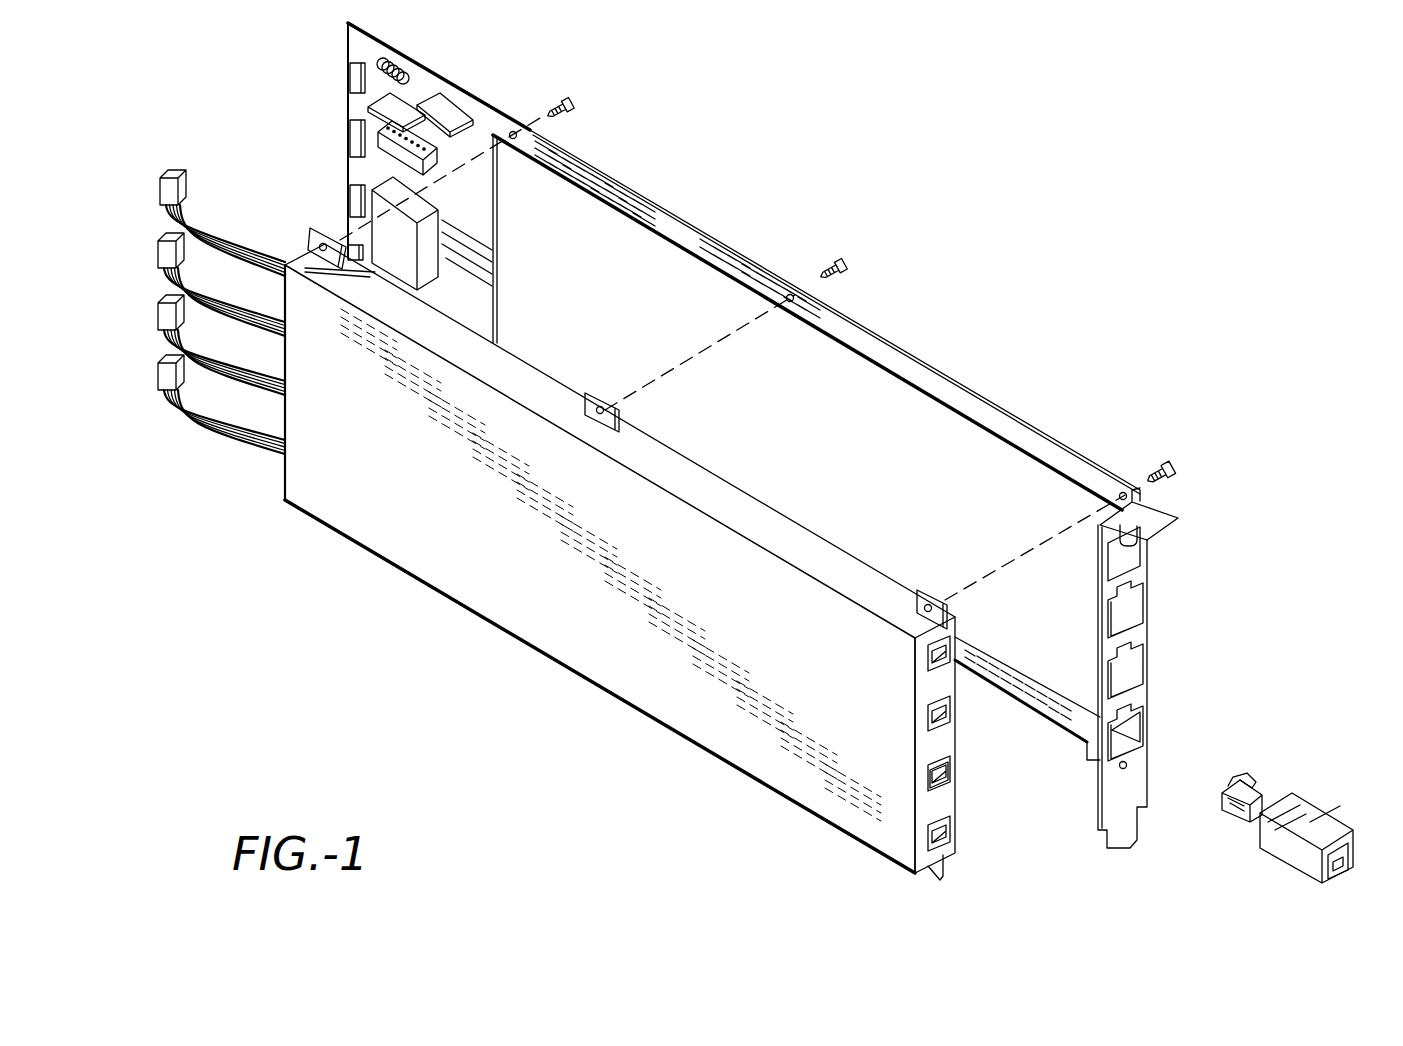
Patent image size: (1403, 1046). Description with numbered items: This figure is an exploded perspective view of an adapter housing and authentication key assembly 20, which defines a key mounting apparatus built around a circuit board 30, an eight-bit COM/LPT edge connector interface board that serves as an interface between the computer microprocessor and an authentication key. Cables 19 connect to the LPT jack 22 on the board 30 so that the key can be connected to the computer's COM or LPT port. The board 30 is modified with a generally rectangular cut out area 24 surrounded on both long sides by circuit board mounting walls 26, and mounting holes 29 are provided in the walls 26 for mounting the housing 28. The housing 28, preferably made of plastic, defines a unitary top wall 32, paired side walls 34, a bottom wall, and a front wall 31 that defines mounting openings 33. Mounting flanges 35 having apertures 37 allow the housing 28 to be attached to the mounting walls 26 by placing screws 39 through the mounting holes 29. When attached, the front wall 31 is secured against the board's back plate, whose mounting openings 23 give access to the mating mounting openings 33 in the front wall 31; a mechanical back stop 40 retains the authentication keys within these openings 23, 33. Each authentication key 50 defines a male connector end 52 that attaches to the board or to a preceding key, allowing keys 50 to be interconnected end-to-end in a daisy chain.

The cables 19 is at (232, 218).
The adapter housing and authentication key assembly 20 is at (488, 702).
The LPT jack 22 is at (348, 76).
The mounting openings 23 is at (1134, 666).
The cut out area 24 is at (807, 322).
The circuit board mounting walls 26 is at (722, 257).
The housing 28 is at (769, 786).
The mounting holes 29 is at (790, 295).
The circuit board 30 is at (455, 96).
The front wall 31 is at (946, 801).
The top wall 32 is at (600, 569).
The mounting openings 33 is at (951, 778).
The side walls 34 is at (620, 433).
The mounting flanges 35 is at (598, 393).
The apertures 37 is at (616, 410).
The screws 39 is at (571, 107).
The mechanical back stop 40 is at (932, 706).
The authentication key 50 is at (1334, 803).
The male connector end 52 is at (1242, 813).